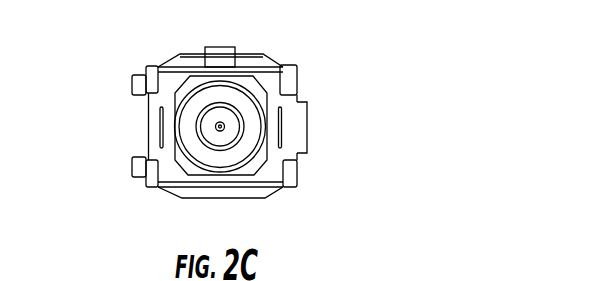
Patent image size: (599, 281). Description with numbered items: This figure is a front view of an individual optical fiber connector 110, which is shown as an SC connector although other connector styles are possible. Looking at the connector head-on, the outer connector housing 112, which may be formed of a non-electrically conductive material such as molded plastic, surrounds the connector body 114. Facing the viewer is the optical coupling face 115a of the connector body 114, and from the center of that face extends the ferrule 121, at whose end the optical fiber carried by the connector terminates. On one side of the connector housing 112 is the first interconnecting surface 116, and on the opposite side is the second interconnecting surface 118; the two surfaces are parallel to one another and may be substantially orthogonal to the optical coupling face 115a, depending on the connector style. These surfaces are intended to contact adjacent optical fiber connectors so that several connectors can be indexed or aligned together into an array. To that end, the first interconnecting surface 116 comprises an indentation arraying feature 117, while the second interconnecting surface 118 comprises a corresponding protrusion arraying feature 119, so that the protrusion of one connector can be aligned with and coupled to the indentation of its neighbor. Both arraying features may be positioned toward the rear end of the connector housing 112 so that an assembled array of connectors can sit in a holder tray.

The optical fiber connector 110 is at (324, 72).
The connector housing 112 is at (307, 176).
The connector body 114 is at (185, 162).
The optical coupling face 115a is at (260, 185).
The first interconnecting surface 116 is at (133, 82).
The indentation arraying feature 117 is at (147, 123).
The second interconnecting surface 118 is at (292, 75).
The protrusion arraying feature 119 is at (308, 128).
The ferrule 121 is at (232, 122).